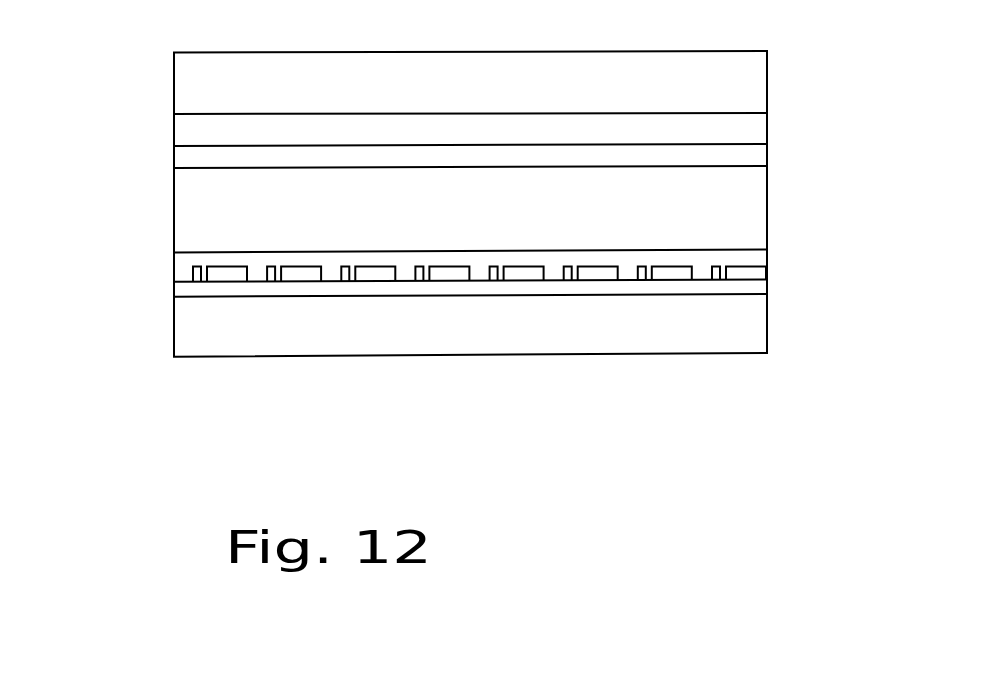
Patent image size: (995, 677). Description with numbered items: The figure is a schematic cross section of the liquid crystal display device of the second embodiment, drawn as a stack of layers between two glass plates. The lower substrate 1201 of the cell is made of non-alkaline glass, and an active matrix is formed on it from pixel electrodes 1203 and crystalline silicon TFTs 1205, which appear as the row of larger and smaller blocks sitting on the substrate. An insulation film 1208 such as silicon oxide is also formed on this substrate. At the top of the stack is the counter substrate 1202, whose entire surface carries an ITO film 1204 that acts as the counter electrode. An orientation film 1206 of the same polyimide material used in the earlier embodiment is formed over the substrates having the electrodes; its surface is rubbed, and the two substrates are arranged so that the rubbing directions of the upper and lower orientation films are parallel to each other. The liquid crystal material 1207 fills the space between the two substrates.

The substrate 1201 is at (745, 323).
The counter substrate 1202 is at (715, 82).
The pixel electrodes 1203 is at (747, 273).
The ITO film 1204 is at (739, 132).
The crystalline silicon TFTs 1205 is at (717, 273).
The orientation film 1206 is at (737, 152).
The liquid crystal material 1207 is at (212, 207).
The insulation film 1208 is at (603, 287).